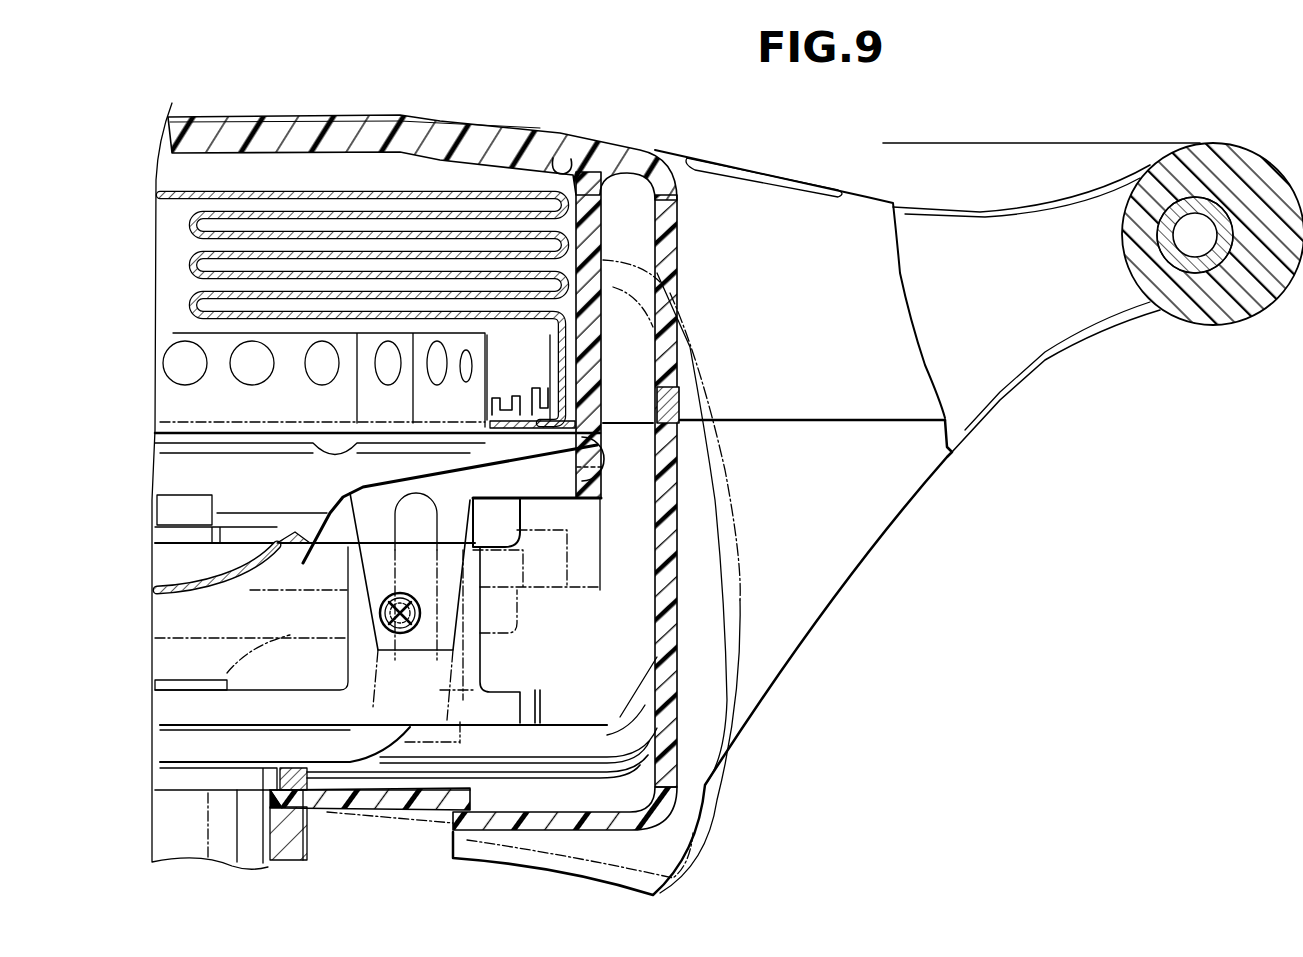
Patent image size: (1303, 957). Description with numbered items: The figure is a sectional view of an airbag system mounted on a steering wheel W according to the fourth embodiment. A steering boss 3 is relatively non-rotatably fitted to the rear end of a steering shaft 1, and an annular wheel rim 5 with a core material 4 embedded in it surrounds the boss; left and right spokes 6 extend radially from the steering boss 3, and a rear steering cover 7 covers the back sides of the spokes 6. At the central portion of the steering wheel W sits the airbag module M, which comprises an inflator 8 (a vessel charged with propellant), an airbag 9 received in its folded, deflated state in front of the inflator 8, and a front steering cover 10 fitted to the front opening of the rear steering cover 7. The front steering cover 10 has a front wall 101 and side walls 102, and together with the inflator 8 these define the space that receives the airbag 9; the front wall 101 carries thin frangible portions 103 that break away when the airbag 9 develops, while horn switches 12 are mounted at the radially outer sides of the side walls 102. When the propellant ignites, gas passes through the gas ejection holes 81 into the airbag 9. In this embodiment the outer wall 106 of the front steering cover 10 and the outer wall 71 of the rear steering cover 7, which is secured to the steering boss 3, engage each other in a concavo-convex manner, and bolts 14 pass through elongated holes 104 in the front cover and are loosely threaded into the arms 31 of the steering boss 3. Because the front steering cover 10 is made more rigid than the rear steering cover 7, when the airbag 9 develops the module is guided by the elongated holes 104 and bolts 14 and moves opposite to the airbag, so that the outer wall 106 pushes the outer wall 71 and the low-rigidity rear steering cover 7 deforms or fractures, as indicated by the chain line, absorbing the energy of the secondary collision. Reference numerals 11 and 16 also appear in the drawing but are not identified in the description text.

The steering shaft 1 is at (209, 831).
The steering boss 3 is at (475, 608).
The arm 31 is at (480, 613).
The core material 4 is at (1165, 247).
The wheel rim 5 is at (1185, 207).
The spoke 6 is at (643, 697).
The rear steering cover 7 is at (643, 498).
The outer wall of the rear steering cover 71 is at (677, 480).
The inflator 8 is at (322, 352).
The gas ejection hole 81 is at (317, 382).
The airbag 9 is at (338, 193).
The front steering cover 10 is at (527, 452).
The front wall 101 is at (170, 130).
The side wall 102 is at (588, 242).
The thin frangible portion 103 is at (573, 169).
The elongated hole 104 is at (450, 504).
The outer wall of the front steering cover 106 is at (667, 322).
The chamber 11 is at (220, 175).
The switch 12 is at (777, 170).
The bolt 14 is at (400, 613).
The latch 16 is at (680, 403).
The airbag module M is at (531, 129).
The steering wheel W is at (1093, 268).